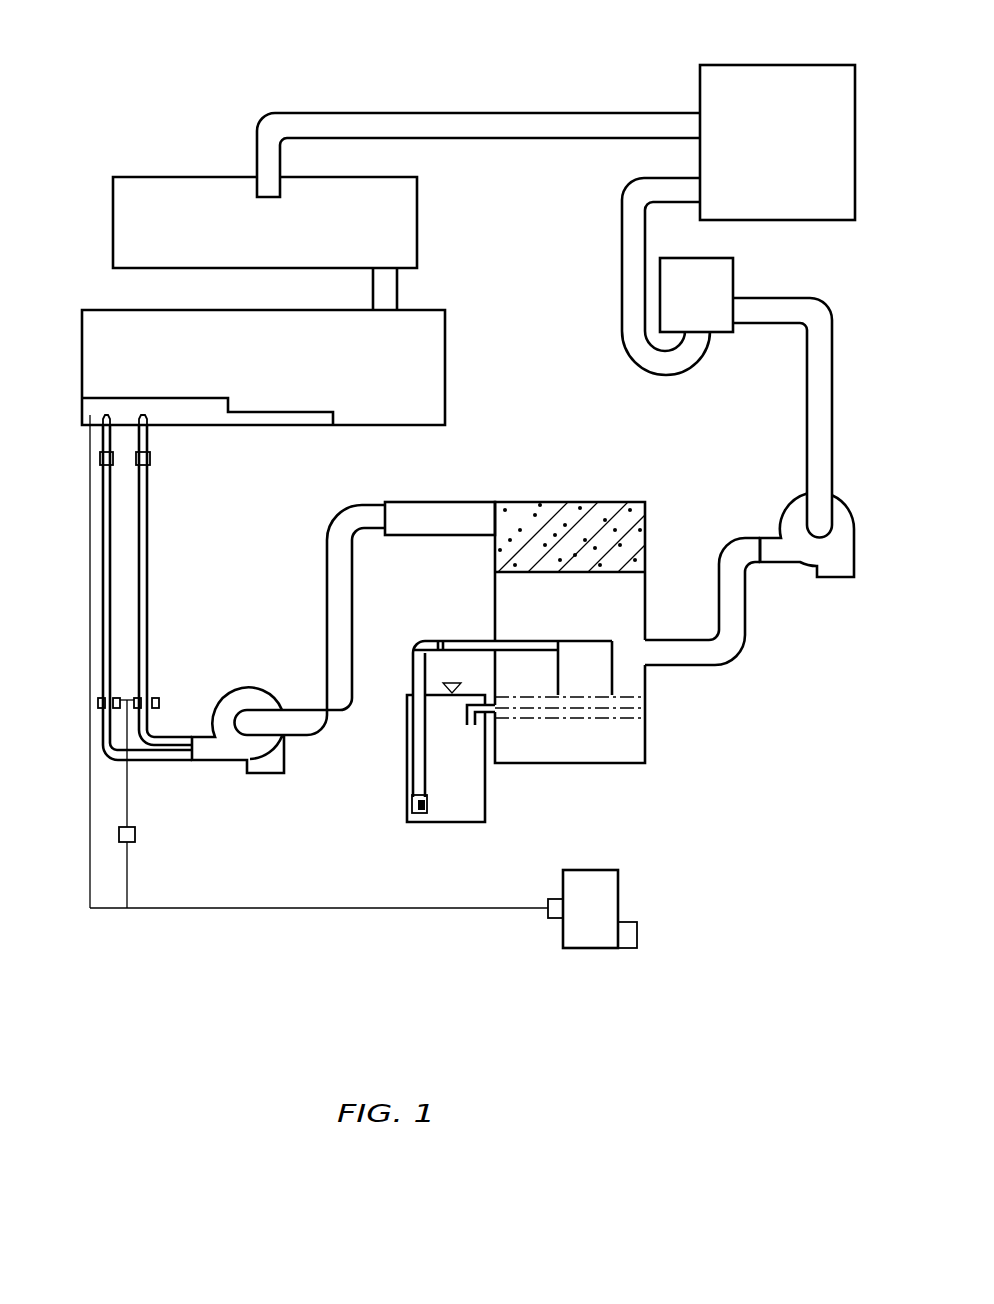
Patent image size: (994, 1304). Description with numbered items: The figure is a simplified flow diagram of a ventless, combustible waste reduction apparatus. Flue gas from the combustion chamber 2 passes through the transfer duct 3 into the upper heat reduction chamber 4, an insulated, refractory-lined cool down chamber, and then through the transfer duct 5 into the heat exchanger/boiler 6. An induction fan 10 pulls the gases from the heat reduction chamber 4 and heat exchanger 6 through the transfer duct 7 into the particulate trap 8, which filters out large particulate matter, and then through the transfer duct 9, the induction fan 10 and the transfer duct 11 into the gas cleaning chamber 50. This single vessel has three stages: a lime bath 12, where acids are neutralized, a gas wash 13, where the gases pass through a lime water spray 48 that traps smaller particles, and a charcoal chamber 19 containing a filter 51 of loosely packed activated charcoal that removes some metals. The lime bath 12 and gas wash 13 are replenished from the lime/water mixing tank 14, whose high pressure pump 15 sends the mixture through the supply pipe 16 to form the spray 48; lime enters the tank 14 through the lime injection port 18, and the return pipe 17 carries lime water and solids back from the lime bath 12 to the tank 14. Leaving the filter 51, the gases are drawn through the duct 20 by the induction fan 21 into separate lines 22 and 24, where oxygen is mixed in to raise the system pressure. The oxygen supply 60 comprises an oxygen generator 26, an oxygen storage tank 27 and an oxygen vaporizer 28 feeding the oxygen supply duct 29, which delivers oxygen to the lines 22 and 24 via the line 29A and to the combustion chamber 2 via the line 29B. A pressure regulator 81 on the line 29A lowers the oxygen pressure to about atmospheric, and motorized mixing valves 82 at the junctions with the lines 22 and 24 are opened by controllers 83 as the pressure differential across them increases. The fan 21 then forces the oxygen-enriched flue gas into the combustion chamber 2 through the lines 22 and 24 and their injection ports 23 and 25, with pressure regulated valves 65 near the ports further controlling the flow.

The combustion chamber 2 is at (445, 375).
The transfer duct 3 is at (397, 300).
The upper heat reduction chamber 4 is at (180, 177).
The transfer duct 5 is at (484, 113).
The heat exchanger/boiler 6 is at (790, 70).
The transfer duct 7 is at (622, 249).
The particulate trap 8 is at (733, 270).
The transfer duct 9 is at (807, 428).
The induction fan 10 is at (840, 502).
The transfer duct 11 is at (733, 598).
The lime bath 12 is at (598, 765).
The gas wash 13 is at (585, 670).
The lime/water mixing tank 14 is at (445, 823).
The high pressure pump 15 is at (428, 805).
The supply pipe 16 is at (413, 740).
The return pipe 17 is at (490, 703).
The lime injection port 18 is at (445, 688).
The charcoal chamber 19 is at (437, 502).
The duct 20 is at (327, 575).
The induction fan 21 is at (245, 688).
The injection supply line 22 is at (103, 618).
The injection port 23 is at (106, 413).
The injection supply line 24 is at (147, 605).
The injection port 25 is at (143, 413).
The oxygen generator 26 is at (637, 935).
The oxygen storage tank 27 is at (590, 870).
The oxygen vaporizer 28 is at (549, 918).
The oxygen supply duct 29 is at (355, 908).
The oxygen supply line 29A is at (127, 888).
The line 29B is at (90, 880).
The lime water spray 48 is at (540, 670).
The gas cleaning chamber 50 is at (660, 536).
The filter 51 is at (572, 520).
The oxygen supply 60 is at (594, 971).
The pressure regulated valves 65 is at (136, 466).
The pressure regulator 81 is at (135, 835).
The motorized mixing valves 82 is at (159, 702).
The controllers 83 is at (136, 696).